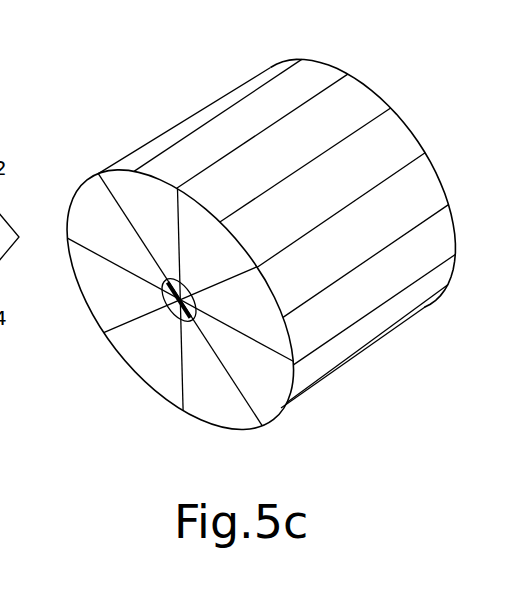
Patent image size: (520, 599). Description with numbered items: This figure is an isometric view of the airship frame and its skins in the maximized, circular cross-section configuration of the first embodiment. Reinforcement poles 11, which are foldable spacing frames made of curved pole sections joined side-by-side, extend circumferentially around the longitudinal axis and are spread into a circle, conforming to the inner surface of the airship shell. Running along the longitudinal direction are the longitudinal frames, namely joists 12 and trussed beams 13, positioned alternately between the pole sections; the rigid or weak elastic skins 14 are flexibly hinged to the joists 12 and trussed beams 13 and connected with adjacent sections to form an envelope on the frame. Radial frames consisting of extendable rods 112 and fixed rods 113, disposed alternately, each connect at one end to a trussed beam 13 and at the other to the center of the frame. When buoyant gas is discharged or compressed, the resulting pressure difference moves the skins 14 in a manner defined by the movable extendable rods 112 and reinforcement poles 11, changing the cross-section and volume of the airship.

The reinforcement pole 11 is at (368, 88).
The joist 12 is at (402, 231).
The trussed beam 13 is at (432, 263).
The skin 14 is at (318, 210).
The extendable rod 112 is at (110, 194).
The fixed rod 113 is at (103, 257).